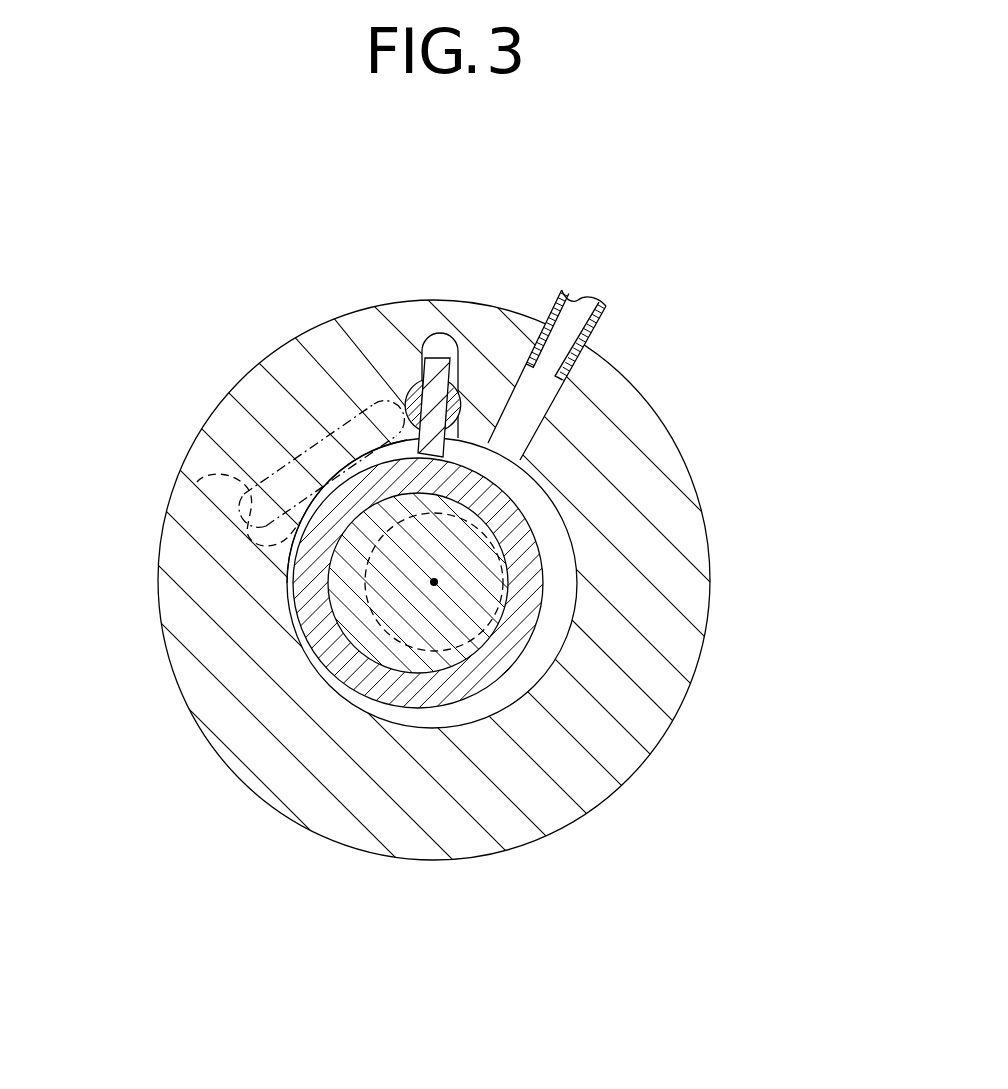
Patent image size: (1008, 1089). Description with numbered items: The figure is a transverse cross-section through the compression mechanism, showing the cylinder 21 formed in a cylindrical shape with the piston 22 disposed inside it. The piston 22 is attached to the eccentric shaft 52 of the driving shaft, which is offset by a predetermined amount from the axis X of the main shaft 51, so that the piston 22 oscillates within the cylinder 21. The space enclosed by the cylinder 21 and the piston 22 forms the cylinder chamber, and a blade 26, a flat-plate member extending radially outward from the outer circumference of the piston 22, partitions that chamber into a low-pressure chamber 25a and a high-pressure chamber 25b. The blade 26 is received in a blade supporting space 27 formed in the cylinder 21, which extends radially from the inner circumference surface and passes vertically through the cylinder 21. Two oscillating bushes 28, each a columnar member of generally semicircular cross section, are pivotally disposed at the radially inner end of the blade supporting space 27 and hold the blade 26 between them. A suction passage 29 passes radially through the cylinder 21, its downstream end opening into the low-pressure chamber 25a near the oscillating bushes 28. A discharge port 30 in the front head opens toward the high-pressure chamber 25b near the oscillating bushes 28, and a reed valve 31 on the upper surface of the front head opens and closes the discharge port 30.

The cylinder 21 is at (678, 711).
The piston 22 is at (481, 693).
The low-pressure chamber 25a is at (550, 535).
The high-pressure chamber 25b is at (355, 460).
The blade 26 is at (422, 375).
The blade supporting space 27 is at (446, 342).
The oscillating bush 28 is at (483, 440).
The suction passage 29 is at (535, 424).
The discharge port 30 is at (378, 432).
The reed valve 31 is at (200, 486).
The main shaft 51 is at (377, 637).
The eccentric shaft 52 is at (357, 628).
The axis X is at (434, 582).